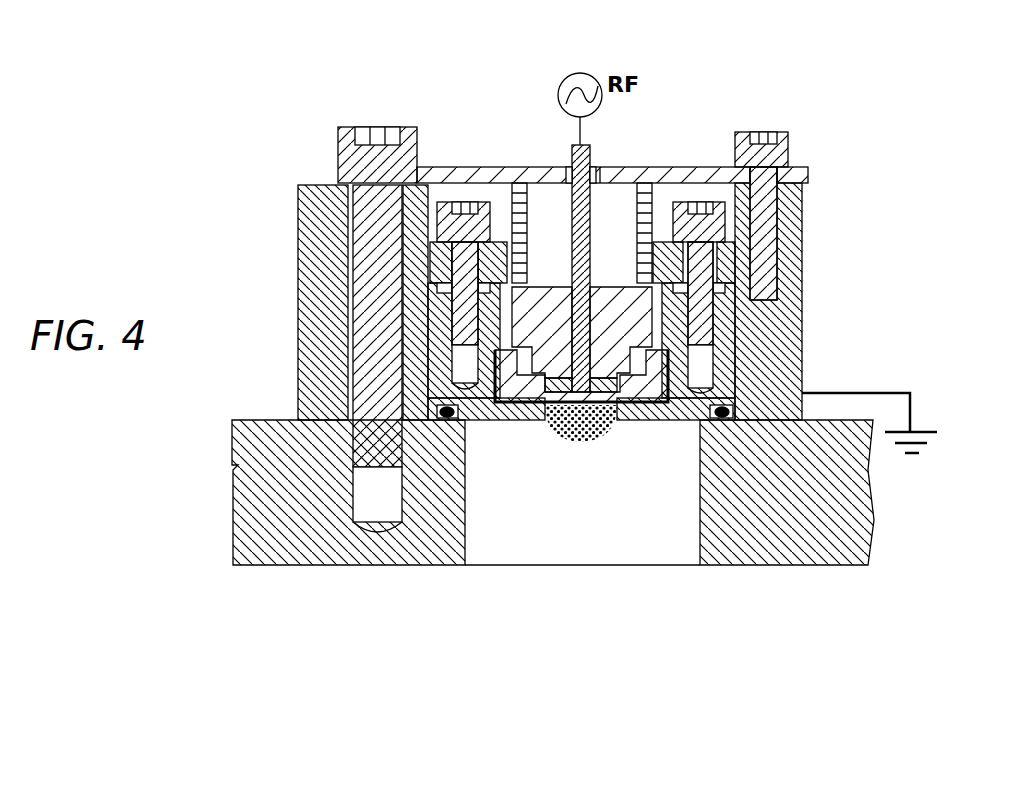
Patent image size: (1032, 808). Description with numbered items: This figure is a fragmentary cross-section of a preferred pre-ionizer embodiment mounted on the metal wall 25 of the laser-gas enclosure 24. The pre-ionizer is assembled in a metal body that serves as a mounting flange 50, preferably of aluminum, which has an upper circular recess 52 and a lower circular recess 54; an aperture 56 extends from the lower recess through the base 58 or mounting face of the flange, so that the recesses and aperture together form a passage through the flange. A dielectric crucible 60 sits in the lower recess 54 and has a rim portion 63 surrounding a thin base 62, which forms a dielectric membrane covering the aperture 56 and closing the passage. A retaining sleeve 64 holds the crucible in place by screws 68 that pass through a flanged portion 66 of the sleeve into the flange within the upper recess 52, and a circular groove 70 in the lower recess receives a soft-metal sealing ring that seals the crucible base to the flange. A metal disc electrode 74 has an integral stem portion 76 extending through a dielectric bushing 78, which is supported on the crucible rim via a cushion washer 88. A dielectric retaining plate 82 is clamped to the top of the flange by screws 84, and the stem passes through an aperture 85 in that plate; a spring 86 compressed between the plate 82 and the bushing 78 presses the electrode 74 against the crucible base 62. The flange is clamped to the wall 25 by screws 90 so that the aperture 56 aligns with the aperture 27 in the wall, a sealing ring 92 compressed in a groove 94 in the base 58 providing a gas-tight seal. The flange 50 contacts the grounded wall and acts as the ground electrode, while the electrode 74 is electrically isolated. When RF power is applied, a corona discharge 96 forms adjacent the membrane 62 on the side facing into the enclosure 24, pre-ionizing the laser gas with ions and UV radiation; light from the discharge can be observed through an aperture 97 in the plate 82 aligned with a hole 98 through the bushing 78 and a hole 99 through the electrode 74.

The enclosure 24 is at (541, 606).
The metal wall 25 is at (314, 575).
The aperture 27 is at (602, 526).
The flange 50 is at (284, 372).
The upper circular recess 52 is at (427, 215).
The lower circular recess 54 is at (652, 315).
The aperture 56 is at (560, 425).
The base 58 is at (763, 420).
The crucible 60 is at (684, 393).
The base 62 is at (551, 400).
The rim portion 63 is at (433, 410).
The retaining sleeve 64 is at (482, 334).
The flanged portion 66 is at (430, 263).
The screws 68 is at (720, 226).
The circular groove 70 is at (545, 405).
The disc electrode 74 is at (546, 358).
The stem portion 76 is at (592, 153).
The bushing 78 is at (490, 313).
The retaining plate 82 is at (822, 168).
The screws 84 is at (788, 140).
The aperture 85 is at (573, 190).
The spring 86 is at (498, 190).
The cushion washer 88 is at (495, 352).
The screws 90 is at (350, 152).
The sealing ring 92 is at (727, 420).
The groove 94 is at (768, 420).
The corona discharge 96 is at (607, 437).
The aperture 97 is at (612, 172).
The hole 98 is at (610, 290).
The hole 99 is at (615, 385).